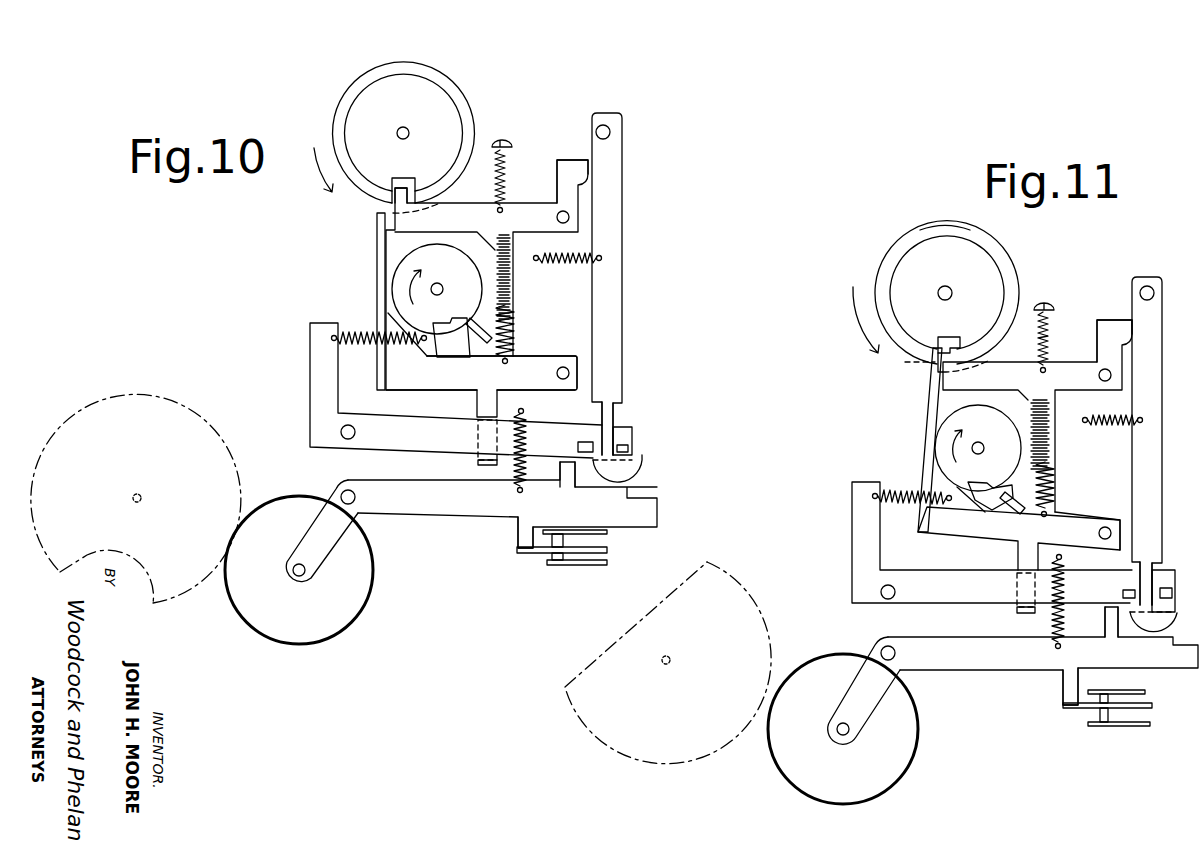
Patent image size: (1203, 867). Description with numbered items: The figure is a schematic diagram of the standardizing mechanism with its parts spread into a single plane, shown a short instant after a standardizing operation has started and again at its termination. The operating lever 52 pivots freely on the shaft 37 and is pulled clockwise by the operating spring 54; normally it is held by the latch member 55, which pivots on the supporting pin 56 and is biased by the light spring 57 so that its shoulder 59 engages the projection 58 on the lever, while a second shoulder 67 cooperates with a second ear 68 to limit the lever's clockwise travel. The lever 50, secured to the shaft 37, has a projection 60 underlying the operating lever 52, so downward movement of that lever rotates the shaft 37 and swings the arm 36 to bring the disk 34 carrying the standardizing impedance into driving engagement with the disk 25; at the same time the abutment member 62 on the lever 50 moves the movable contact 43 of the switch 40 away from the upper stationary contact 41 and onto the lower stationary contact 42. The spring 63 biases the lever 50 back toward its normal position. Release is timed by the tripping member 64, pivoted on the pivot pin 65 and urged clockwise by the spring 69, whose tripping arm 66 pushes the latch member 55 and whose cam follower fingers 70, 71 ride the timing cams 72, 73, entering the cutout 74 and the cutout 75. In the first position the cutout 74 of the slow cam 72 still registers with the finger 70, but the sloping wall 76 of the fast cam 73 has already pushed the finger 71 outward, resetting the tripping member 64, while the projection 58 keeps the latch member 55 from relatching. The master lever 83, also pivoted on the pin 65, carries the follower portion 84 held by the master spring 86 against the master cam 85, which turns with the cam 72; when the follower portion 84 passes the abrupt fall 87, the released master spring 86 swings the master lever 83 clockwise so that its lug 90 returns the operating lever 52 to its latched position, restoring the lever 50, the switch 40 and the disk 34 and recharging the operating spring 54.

In FIG. 10, the disk 25 is at (137, 498).
In FIG. 11, the disk 25 is at (668, 645).
In FIG. 10, the disk 34 is at (308, 570).
In FIG. 11, the disk 34 is at (862, 729).
In FIG. 10, the arm 36 is at (322, 531).
In FIG. 11, the arm 36 is at (844, 686).
In FIG. 10, the shaft 37 is at (331, 464).
In FIG. 11, the shaft 37 is at (855, 622).
In FIG. 10, the switch 40 is at (580, 543).
In FIG. 11, the switch 40 is at (1088, 706).
In FIG. 10, the upper stationary contact 41 is at (573, 511).
In FIG. 11, the upper stationary contact 41 is at (1116, 672).
In FIG. 10, the lower stationary contact 42 is at (562, 576).
In FIG. 11, the lower stationary contact 42 is at (1093, 741).
In FIG. 10, the movable contact 43 is at (580, 548).
In FIG. 11, the movable contact 43 is at (1088, 719).
In FIG. 10, the lever 50 is at (502, 510).
In FIG. 11, the lever 50 is at (1043, 658).
In FIG. 10, the operating lever 52 is at (470, 390).
In FIG. 11, the operating lever 52 is at (998, 547).
In FIG. 10, the operating spring 54 is at (378, 315).
In FIG. 11, the operating spring 54 is at (912, 474).
In FIG. 10, the latch member 55 is at (627, 284).
In FIG. 11, the latch member 55 is at (1161, 441).
In FIG. 10, the supporting pin 56 is at (631, 128).
In FIG. 11, the supporting pin 56 is at (1140, 271).
In FIG. 10, the light spring 57 is at (568, 273).
In FIG. 11, the light spring 57 is at (1113, 437).
In FIG. 10, the projection 58 is at (564, 439).
In FIG. 11, the projection 58 is at (1110, 585).
In FIG. 10, the shoulder 59 is at (582, 427).
In FIG. 11, the shoulder 59 is at (1150, 613).
In FIG. 10, the projection 60 is at (591, 484).
In FIG. 11, the projection 60 is at (1096, 637).
In FIG. 10, the abutment member 62 is at (505, 542).
In FIG. 11, the abutment member 62 is at (1041, 686).
In FIG. 10, the spring 63 is at (496, 458).
In FIG. 11, the spring 63 is at (1039, 608).
In FIG. 10, the tripping member 64 is at (487, 288).
In FIG. 11, the tripping member 64 is at (1035, 416).
In FIG. 10, the pivot pin 65 is at (545, 372).
In FIG. 11, the pivot pin 65 is at (1087, 515).
In FIG. 10, the tripping arm 66 is at (572, 153).
In FIG. 11, the tripping arm 66 is at (1114, 326).
In FIG. 10, the second shoulder 67 is at (636, 471).
In FIG. 11, the second shoulder 67 is at (1153, 622).
In FIG. 10, the second ear 68 is at (649, 450).
In FIG. 11, the second ear 68 is at (1166, 593).
In FIG. 10, the spring 69 is at (525, 168).
In FIG. 11, the spring 69 is at (1063, 326).
In FIG. 10, the cam follower finger 70 is at (378, 200).
In FIG. 11, the cam follower finger 70 is at (937, 331).
In FIG. 10, the cam follower finger 71 is at (476, 349).
In FIG. 11, the cam follower finger 71 is at (1012, 511).
In FIG. 10, the timing cam 72 is at (394, 137).
In FIG. 11, the timing cam 72 is at (934, 296).
In FIG. 10, the timing cam 73 is at (437, 271).
In FIG. 11, the timing cam 73 is at (978, 430).
In FIG. 10, the cutout 74 is at (406, 177).
In FIG. 10, the cutout 75 is at (418, 346).
In FIG. 11, the cutout 75 is at (974, 513).
In FIG. 10, the sloping wall 76 is at (451, 326).
In FIG. 11, the sloping wall 76 is at (990, 481).
In FIG. 10, the master lever 83 is at (480, 384).
In FIG. 11, the master lever 83 is at (1019, 538).
In FIG. 10, the follower portion 84 is at (358, 301).
In FIG. 11, the follower portion 84 is at (914, 440).
In FIG. 11, the master cam 85 is at (940, 213).
In FIG. 10, the master spring 86 is at (531, 334).
In FIG. 11, the master spring 86 is at (1063, 489).
In FIG. 11, the abrupt fall 87 is at (907, 362).
In FIG. 10, the lug 90 is at (463, 450).
In FIG. 11, the lug 90 is at (1004, 604).